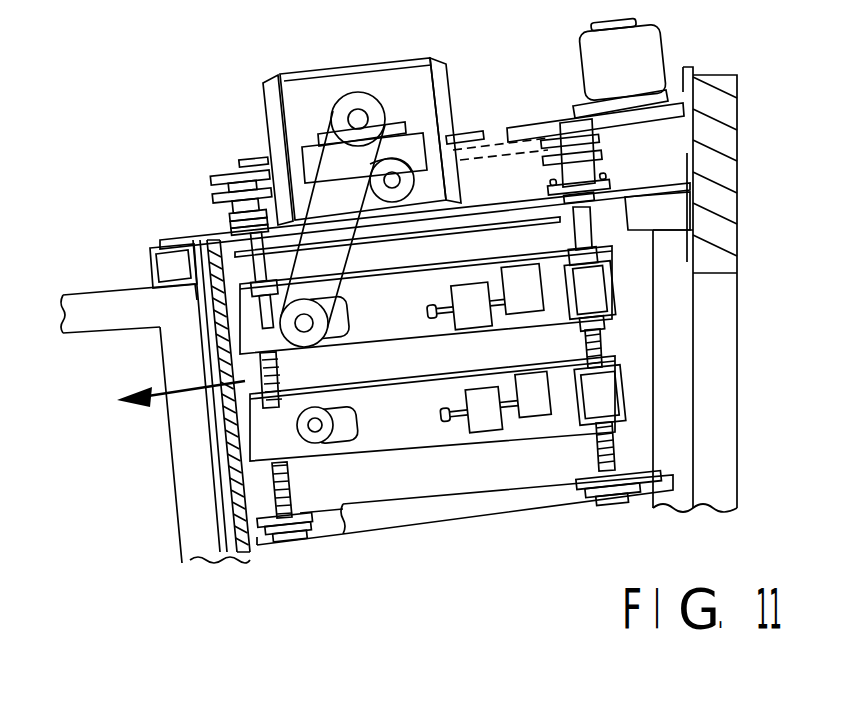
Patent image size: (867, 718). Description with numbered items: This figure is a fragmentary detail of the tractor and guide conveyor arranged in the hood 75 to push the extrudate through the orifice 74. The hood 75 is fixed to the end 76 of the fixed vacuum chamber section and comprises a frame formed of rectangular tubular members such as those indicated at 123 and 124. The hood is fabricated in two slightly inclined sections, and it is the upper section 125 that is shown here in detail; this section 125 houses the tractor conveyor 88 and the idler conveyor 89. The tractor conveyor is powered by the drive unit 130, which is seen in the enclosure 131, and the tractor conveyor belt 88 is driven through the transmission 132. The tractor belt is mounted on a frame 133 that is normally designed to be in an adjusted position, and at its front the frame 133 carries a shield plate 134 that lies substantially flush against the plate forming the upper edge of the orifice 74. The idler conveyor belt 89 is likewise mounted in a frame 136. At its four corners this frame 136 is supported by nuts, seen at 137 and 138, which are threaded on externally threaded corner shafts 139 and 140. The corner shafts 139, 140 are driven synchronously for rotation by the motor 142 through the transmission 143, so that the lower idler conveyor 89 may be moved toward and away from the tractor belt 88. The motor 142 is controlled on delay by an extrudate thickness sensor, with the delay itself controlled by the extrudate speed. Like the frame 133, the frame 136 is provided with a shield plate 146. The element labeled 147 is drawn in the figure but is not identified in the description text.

The orifice 74 is at (206, 440).
The hood 75 is at (164, 177).
The end of the fixed vacuum chamber section 76 is at (717, 72).
The tractor conveyor belt 88 is at (455, 340).
The idler conveyor belt 89 is at (457, 450).
The rectangular tubular member 123 is at (150, 268).
The rectangular tubular member 124 is at (107, 292).
The upper section of the hood 125 is at (296, 58).
The drive unit 130 is at (407, 118).
The enclosure 131 is at (402, 60).
The transmission 132 is at (348, 257).
The frame 133 is at (388, 317).
The shield plate 134 is at (260, 264).
The frame 136 is at (398, 433).
The nut 137 is at (275, 422).
The nut 138 is at (612, 390).
The corner shaft 139 is at (288, 490).
The corner shaft 140 is at (610, 457).
The motor 142 is at (598, 50).
The transmission 143 is at (562, 118).
The shield plate 146 is at (247, 483).
The rack teeth 147 is at (247, 517).